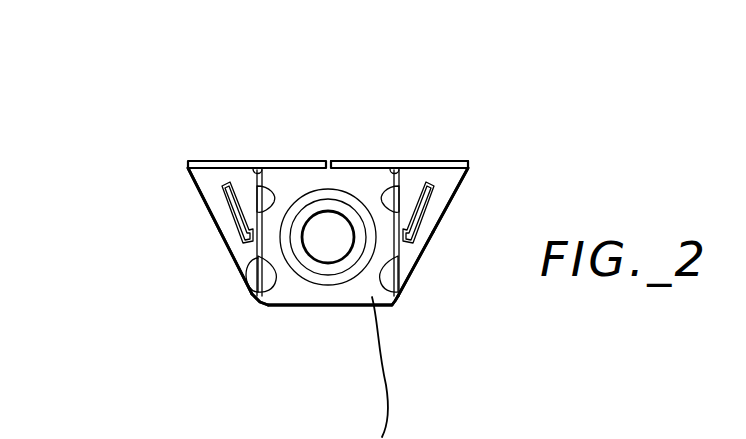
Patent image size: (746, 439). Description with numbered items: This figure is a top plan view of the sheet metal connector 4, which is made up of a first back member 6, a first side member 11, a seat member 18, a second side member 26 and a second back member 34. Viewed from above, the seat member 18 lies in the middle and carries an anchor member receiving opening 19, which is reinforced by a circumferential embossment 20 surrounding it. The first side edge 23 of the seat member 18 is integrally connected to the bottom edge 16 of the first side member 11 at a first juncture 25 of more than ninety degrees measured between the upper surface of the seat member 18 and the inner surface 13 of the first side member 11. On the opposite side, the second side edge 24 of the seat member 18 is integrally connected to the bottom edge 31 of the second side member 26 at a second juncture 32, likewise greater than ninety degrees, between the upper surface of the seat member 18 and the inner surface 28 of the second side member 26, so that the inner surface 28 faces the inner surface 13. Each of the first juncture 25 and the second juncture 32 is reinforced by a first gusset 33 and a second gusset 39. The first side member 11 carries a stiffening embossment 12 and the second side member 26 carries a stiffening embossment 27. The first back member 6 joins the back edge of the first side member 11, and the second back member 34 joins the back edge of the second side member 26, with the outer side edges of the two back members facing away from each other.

The sheet metal connector 4 is at (413, 138).
The first back member 6 is at (450, 150).
The bottom edge 16 is at (418, 168).
The second back member 34 is at (249, 150).
The second juncture 32 is at (272, 216).
The second side edge 24 is at (262, 194).
The second gusset 39 is at (392, 200).
The first side edge 23 is at (405, 254).
The first gusset 33 is at (256, 297).
The stiffening embossment 27 is at (248, 237).
The first side member 11 is at (454, 233).
The inner surface 28 is at (210, 190).
The second side member 26 is at (229, 268).
The bottom edge 31 is at (250, 293).
The seat member 18 is at (277, 322).
The first juncture 25 is at (408, 298).
The inner surface 13 is at (450, 185).
The stiffening embossment 12 is at (453, 231).
The anchor member receiving opening 19 is at (331, 263).
The circumferential embossment 20 is at (348, 270).